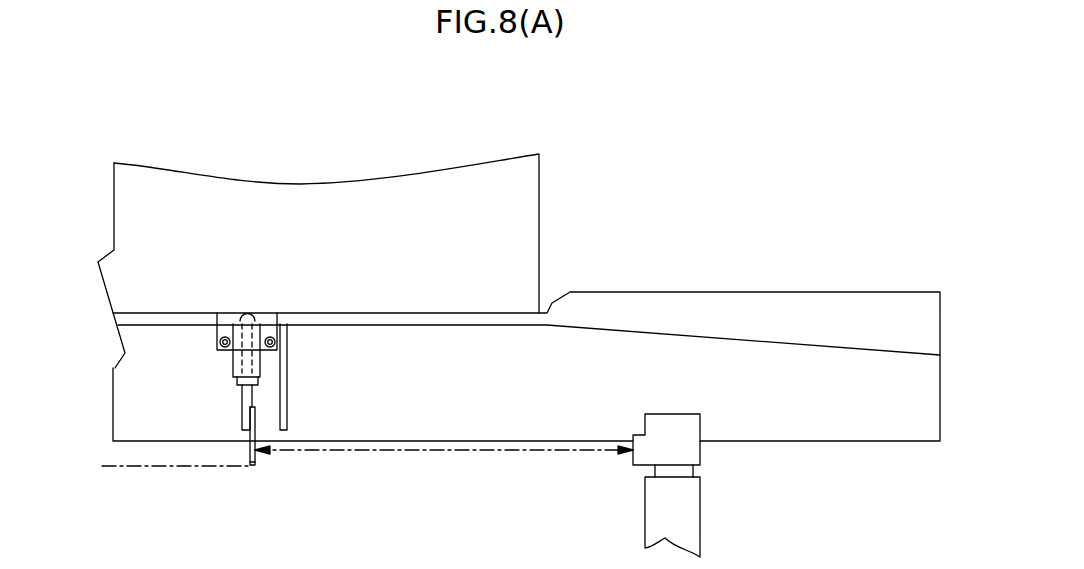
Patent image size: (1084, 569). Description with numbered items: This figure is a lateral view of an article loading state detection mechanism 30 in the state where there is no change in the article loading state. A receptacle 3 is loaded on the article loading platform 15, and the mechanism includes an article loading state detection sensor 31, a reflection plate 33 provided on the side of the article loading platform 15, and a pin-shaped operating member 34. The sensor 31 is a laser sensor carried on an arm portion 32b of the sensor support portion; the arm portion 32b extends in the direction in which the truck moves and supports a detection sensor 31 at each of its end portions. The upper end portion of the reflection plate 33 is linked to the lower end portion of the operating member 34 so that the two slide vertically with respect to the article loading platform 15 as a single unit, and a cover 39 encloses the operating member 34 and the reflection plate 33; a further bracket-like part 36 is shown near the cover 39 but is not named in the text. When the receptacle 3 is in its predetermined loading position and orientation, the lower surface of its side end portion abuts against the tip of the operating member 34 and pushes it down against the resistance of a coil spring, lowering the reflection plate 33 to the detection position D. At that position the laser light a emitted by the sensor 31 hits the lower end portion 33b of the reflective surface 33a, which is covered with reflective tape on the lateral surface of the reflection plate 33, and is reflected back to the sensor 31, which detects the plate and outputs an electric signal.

The receptacle 3 is at (520, 212).
The article loading state detection mechanism 30 is at (638, 267).
The article loading platform 15 is at (128, 398).
The operating member 34 is at (250, 312).
The holder 36 is at (233, 359).
The cover 39 is at (287, 372).
The reflection plate 33 is at (255, 417).
The reflective surface 33a is at (255, 459).
The lower end portion of the reflective surface 33b is at (256, 466).
The article loading state detection sensor 31 is at (688, 431).
The arm portion 32b is at (683, 502).
The laser light a is at (515, 450).
The detection position D is at (163, 466).